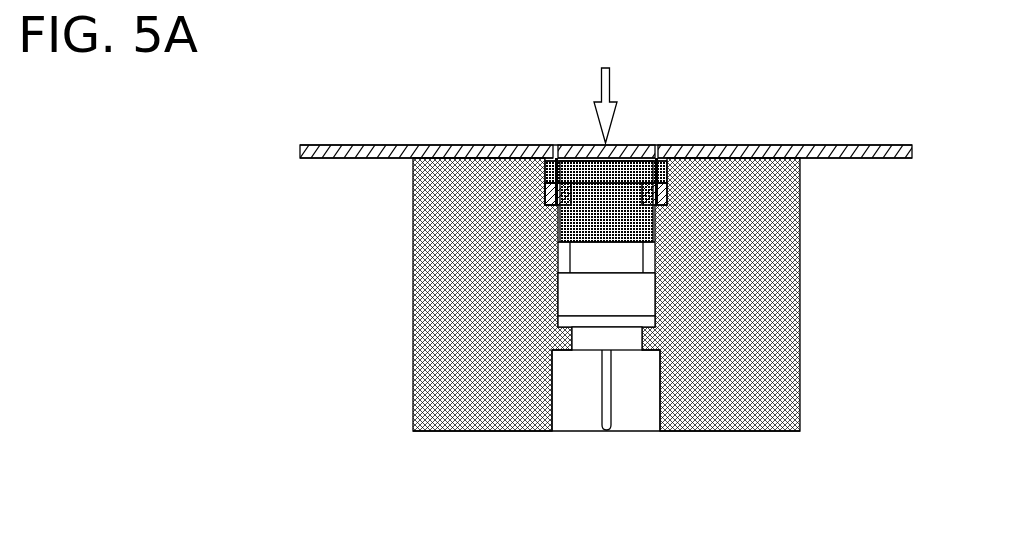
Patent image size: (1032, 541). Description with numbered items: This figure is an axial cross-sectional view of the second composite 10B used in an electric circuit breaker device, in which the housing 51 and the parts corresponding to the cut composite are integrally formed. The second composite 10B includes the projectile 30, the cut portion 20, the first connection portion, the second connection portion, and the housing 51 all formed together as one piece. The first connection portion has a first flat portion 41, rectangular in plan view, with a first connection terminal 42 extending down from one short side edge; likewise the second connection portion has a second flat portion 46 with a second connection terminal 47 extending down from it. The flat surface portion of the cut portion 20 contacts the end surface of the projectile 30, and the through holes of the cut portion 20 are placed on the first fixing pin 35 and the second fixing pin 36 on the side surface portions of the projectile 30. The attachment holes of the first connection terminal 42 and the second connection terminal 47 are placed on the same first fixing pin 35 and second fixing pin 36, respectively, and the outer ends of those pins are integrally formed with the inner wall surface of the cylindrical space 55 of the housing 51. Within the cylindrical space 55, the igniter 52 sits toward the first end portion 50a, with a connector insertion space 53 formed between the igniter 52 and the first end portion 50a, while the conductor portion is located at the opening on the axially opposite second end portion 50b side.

The second composite 10B is at (733, 131).
The cut portion 20 is at (635, 144).
The projectile 30 is at (630, 235).
The first fixing pin 35 is at (550, 172).
The second fixing pin 36 is at (658, 175).
The first flat portion 41 is at (377, 145).
The first connection terminal 42 is at (543, 192).
The second flat portion 46 is at (836, 146).
The second connection terminal 47 is at (670, 203).
The first end portion 50a is at (440, 432).
The second end portion 50b is at (456, 147).
The housing 51 is at (412, 354).
The igniter 52 is at (628, 305).
The connector insertion space 53 is at (555, 400).
The cylindrical space 55 is at (563, 257).